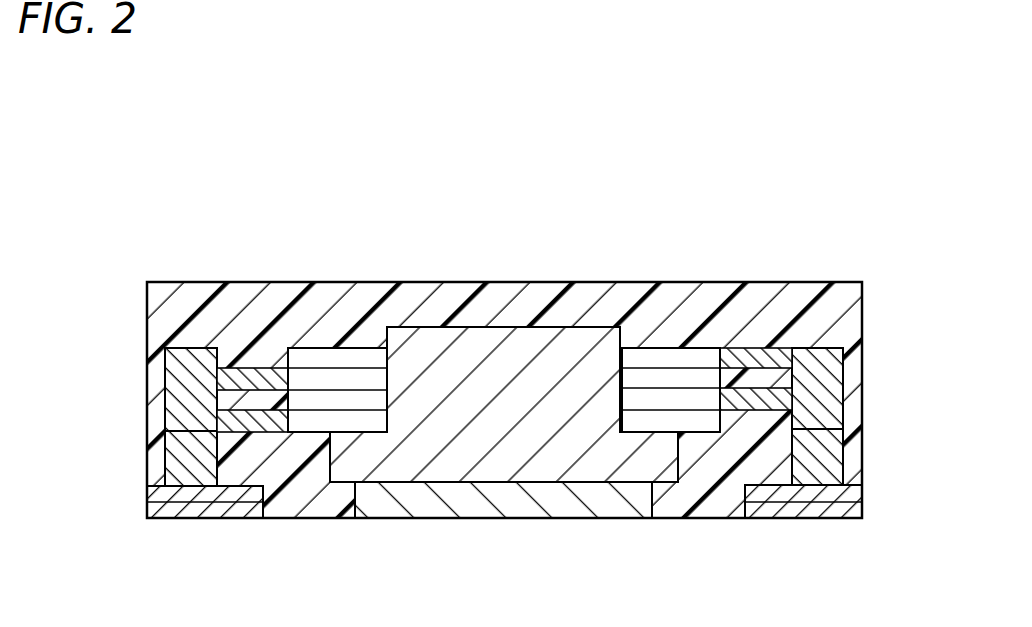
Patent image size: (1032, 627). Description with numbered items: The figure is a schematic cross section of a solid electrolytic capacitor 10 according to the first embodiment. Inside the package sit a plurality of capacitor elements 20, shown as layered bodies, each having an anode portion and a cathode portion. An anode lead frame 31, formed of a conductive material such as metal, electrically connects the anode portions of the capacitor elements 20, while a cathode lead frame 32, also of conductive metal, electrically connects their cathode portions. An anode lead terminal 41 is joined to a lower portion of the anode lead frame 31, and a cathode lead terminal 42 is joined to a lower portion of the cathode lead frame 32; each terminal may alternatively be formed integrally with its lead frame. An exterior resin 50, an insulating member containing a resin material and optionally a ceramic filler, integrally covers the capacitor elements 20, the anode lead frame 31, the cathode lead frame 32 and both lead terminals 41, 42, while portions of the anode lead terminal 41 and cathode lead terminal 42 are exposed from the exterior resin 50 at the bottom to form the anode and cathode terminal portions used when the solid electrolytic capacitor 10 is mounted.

The solid electrolytic capacitor 10 is at (303, 226).
The capacitor element 20 is at (347, 422).
The anode lead frame 31 is at (158, 402).
The cathode lead frame 32 is at (528, 347).
The anode lead terminal 41 is at (202, 522).
The cathode lead terminal 42 is at (518, 520).
The exterior resin 50 is at (197, 295).